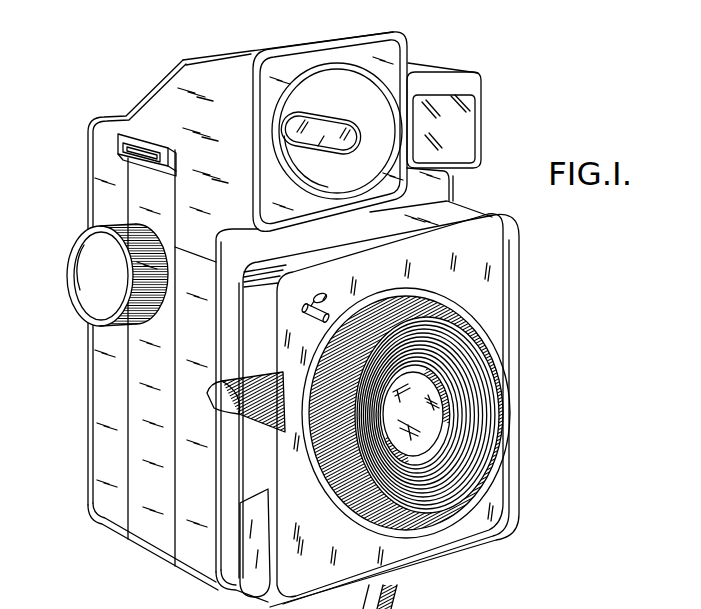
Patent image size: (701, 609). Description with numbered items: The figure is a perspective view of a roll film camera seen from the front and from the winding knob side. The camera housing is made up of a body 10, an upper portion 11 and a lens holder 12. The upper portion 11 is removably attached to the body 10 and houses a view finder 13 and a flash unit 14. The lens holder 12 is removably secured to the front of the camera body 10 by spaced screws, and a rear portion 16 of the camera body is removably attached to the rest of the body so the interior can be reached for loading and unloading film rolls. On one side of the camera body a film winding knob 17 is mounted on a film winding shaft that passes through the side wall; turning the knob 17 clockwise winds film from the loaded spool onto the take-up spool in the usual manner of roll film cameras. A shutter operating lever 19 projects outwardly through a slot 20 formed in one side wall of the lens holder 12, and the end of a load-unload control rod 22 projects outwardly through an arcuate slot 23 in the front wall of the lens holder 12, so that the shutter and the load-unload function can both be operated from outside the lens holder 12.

The body 10 is at (85, 483).
The upper portion 11 is at (157, 83).
The lens holder 12 is at (463, 520).
The view finder 13 is at (468, 122).
The flash unit 14 is at (318, 90).
The rear portion 16 is at (100, 393).
The film winding knob 17 is at (82, 277).
The shutter operating lever 19 is at (246, 414).
The slot 20 is at (264, 484).
The load-unload control rod 22 is at (329, 309).
The arcuate slot 23 is at (319, 306).